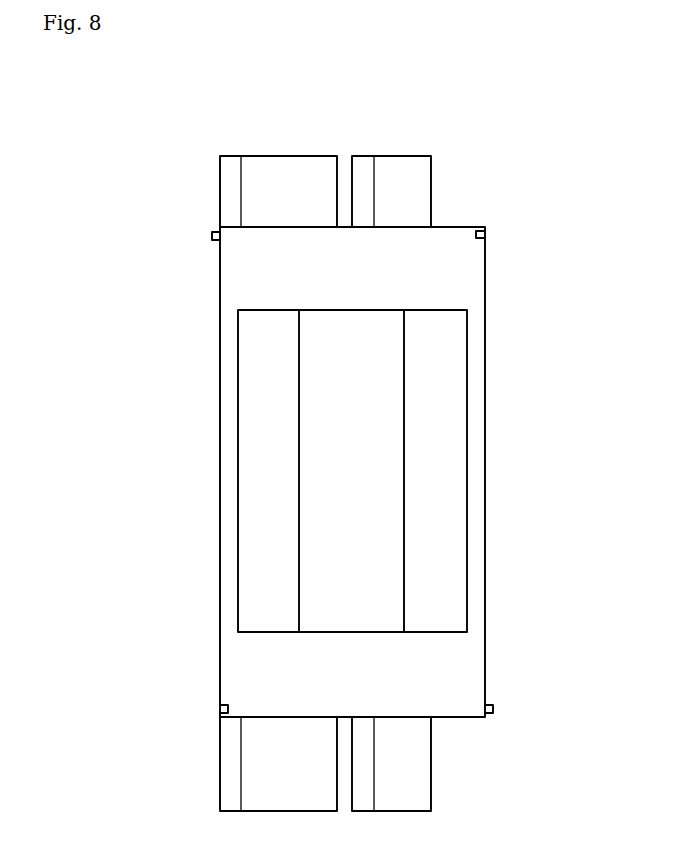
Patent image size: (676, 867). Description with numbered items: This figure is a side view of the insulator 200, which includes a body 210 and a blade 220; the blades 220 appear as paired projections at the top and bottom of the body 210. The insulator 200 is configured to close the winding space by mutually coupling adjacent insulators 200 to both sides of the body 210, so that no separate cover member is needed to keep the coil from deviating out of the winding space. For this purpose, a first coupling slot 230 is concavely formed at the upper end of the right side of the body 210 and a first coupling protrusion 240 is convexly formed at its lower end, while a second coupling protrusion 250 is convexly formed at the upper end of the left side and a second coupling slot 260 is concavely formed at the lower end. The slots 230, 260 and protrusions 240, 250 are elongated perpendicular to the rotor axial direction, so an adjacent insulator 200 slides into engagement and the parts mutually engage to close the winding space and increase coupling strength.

The insulator 200 is at (163, 108).
The body 210 is at (452, 287).
The blade 220 is at (363, 189).
The first coupling slot 230 is at (486, 236).
The first coupling protrusion 240 is at (494, 709).
The second coupling protrusion 250 is at (211, 233).
The second coupling slot 260 is at (220, 709).